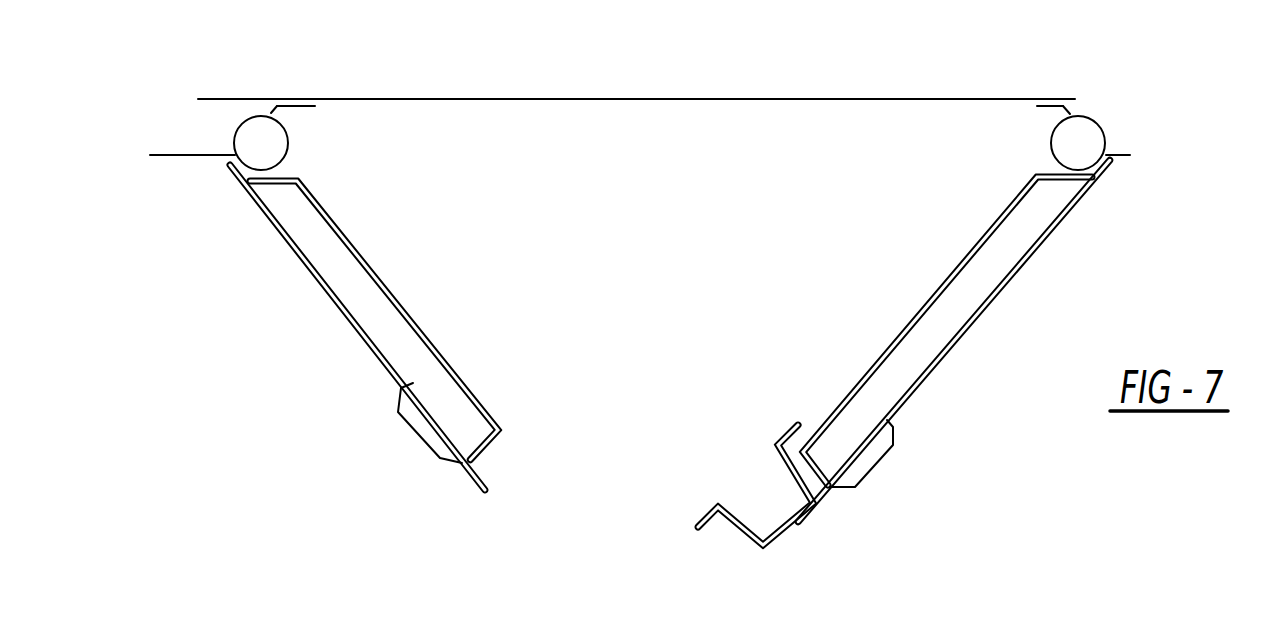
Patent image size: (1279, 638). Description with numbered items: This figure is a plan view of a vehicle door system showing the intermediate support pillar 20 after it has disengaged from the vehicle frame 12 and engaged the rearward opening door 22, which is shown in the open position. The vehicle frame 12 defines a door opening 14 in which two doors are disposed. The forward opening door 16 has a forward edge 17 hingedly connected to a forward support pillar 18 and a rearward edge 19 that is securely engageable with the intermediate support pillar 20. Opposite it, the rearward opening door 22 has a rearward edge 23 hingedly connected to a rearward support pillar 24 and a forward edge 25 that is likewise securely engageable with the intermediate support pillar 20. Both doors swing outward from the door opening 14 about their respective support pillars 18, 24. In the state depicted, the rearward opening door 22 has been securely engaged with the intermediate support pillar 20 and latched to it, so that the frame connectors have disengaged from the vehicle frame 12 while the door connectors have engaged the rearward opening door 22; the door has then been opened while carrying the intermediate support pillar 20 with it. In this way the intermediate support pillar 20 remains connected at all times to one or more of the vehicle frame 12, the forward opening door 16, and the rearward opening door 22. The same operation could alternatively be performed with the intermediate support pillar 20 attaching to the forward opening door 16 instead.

The vehicle frame 12 is at (802, 98).
The door opening 14 is at (643, 245).
The forward opening door 16 is at (370, 310).
The forward edge 17 is at (237, 182).
The forward support pillar 18 is at (265, 140).
The rearward edge 19 is at (482, 475).
The intermediate support pillar 20 is at (770, 508).
The rearward opening door 22 is at (955, 300).
The rearward edge 23 is at (1103, 173).
The rearward support pillar 24 is at (1087, 140).
The forward edge 25 is at (813, 502).